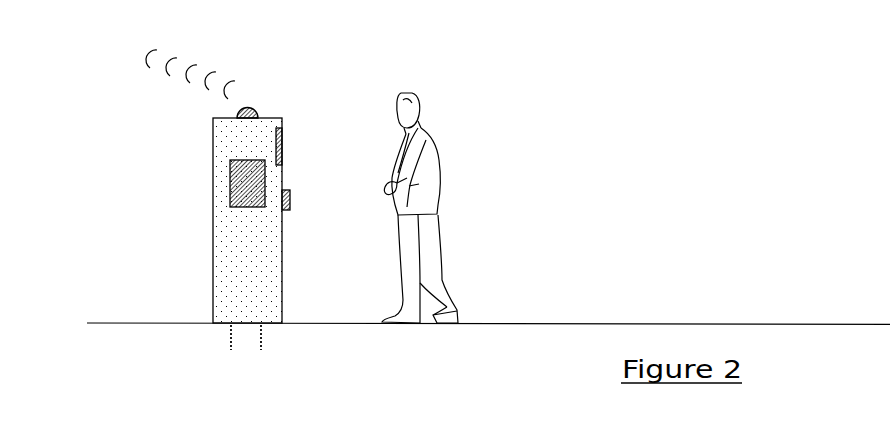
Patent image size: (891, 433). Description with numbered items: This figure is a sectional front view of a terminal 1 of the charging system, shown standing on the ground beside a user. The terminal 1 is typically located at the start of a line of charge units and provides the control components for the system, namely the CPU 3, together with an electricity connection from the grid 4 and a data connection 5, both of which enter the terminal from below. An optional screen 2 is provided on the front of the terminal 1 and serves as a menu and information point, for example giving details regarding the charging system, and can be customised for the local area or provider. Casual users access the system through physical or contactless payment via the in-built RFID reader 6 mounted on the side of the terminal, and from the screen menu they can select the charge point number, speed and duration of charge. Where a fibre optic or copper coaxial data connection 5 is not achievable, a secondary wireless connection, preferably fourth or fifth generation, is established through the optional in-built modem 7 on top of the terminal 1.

The terminal 1 is at (192, 220).
The screen 2 is at (285, 138).
The control components for the system (CPU) 3 is at (230, 209).
The electricity connection from the grid 4 is at (240, 349).
The data connection 5 is at (246, 337).
The RFID reader 6 is at (288, 212).
The modem 7 is at (261, 105).